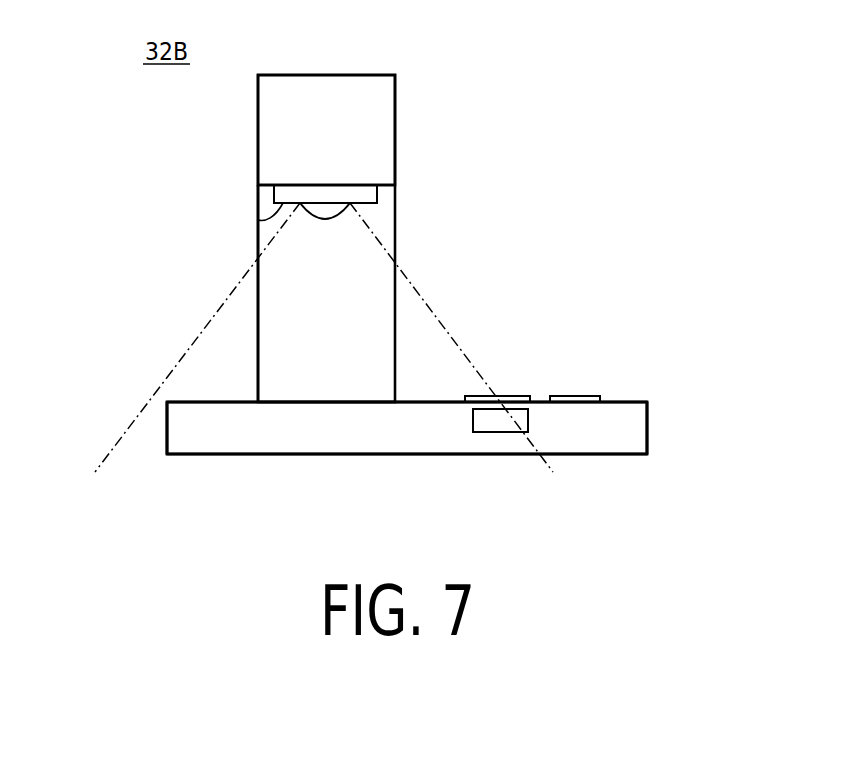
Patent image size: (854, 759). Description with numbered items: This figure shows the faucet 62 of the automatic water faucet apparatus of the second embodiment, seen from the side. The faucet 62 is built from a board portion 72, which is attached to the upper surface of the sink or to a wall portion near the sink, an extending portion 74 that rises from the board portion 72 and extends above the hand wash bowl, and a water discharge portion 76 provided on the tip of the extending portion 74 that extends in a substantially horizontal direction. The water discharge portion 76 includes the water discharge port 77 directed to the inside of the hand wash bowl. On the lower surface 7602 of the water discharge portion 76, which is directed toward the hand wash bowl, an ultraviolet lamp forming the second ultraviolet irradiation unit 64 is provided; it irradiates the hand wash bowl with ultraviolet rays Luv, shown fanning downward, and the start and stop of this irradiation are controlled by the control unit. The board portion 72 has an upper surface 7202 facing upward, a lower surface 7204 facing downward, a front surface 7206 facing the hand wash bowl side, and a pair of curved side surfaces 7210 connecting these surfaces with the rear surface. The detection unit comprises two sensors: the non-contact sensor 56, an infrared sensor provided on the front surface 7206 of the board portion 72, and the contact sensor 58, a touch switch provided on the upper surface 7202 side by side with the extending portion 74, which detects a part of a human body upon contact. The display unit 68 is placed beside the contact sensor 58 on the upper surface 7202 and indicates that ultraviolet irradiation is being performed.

The faucet 62 is at (407, 143).
The water discharge portion 76 is at (326, 87).
The lower surface of the water discharge portion 7602 is at (366, 186).
The second ultraviolet irradiation unit 64 is at (322, 216).
The water discharge port 77 is at (258, 220).
The extending portion 74 is at (257, 296).
The ultraviolet rays Luv is at (170, 375).
The board portion 72 is at (635, 401).
The front surface 7206 is at (328, 428).
The upper surface 7202 is at (538, 401).
The lower surface 7204 is at (594, 455).
The curved side surfaces 7210 is at (166, 430).
The contact sensor 58 is at (503, 394).
The display unit 68 is at (575, 395).
The non-contact sensor 56 is at (499, 426).